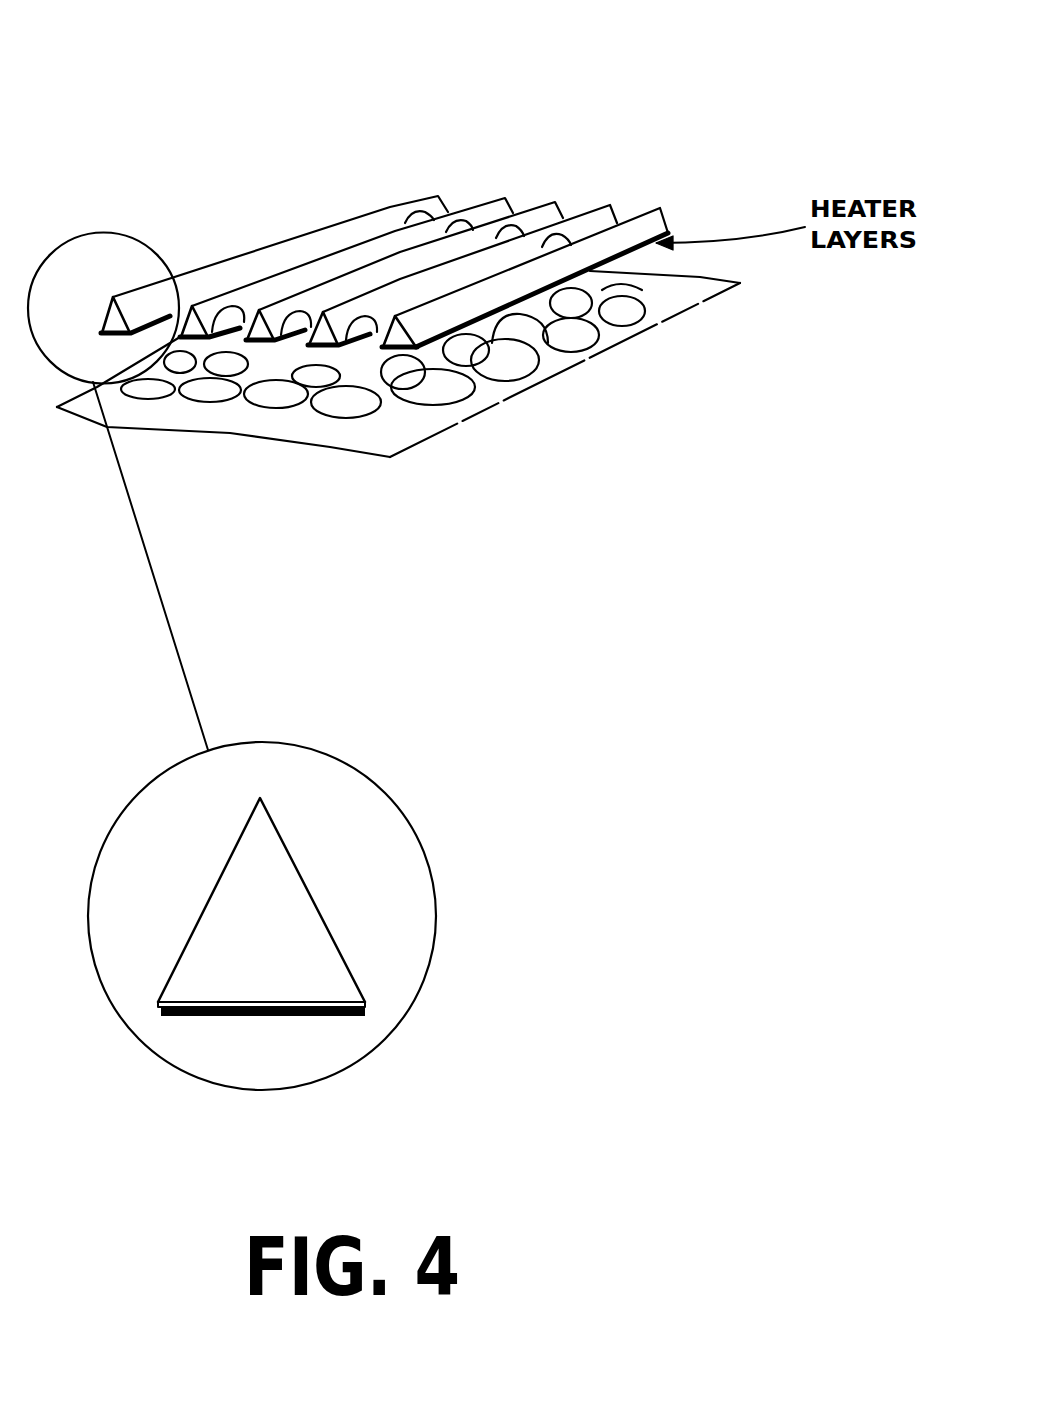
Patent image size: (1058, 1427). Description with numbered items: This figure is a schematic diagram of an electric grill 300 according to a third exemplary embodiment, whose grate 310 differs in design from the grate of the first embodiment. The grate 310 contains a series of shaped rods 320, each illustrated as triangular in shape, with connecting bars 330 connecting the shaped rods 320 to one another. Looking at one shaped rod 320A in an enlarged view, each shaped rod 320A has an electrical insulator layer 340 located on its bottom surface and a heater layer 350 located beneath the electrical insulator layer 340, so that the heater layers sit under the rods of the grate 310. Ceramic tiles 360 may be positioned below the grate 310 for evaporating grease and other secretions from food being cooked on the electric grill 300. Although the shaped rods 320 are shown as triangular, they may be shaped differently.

The electric grill 300 is at (704, 676).
The grate 310 is at (668, 210).
The shaped rods 320 is at (437, 193).
The shaped rod 320A is at (287, 830).
The connecting bars 330 is at (190, 303).
The electrical insulator layer 340 is at (380, 1009).
The heater layer 350 is at (271, 1036).
The ceramic tiles 360 is at (498, 390).